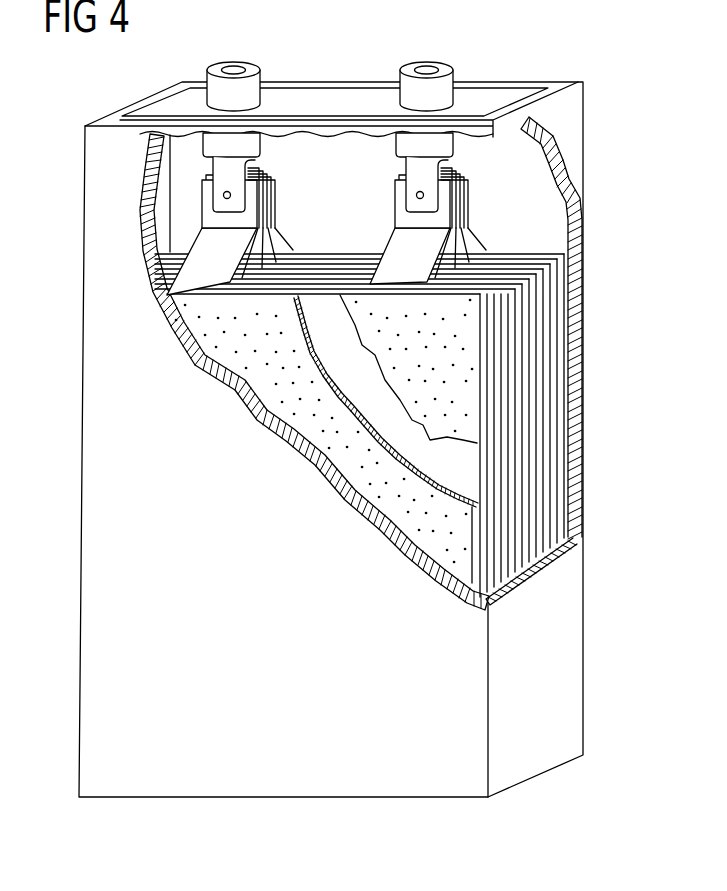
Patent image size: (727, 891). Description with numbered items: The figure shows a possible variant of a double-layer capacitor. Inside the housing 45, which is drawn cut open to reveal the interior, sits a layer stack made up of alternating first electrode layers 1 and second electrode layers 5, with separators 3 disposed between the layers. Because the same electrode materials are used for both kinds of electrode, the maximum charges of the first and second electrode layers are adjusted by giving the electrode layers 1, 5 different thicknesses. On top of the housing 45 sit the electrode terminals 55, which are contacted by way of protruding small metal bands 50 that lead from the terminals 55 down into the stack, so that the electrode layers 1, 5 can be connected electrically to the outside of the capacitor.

The first electrode layer 1 is at (457, 541).
The separator 3 is at (470, 468).
The second electrode layer 5 is at (470, 333).
The housing 45 is at (570, 662).
The small metal band 50 is at (263, 190).
The electrode terminal 55 is at (233, 63).